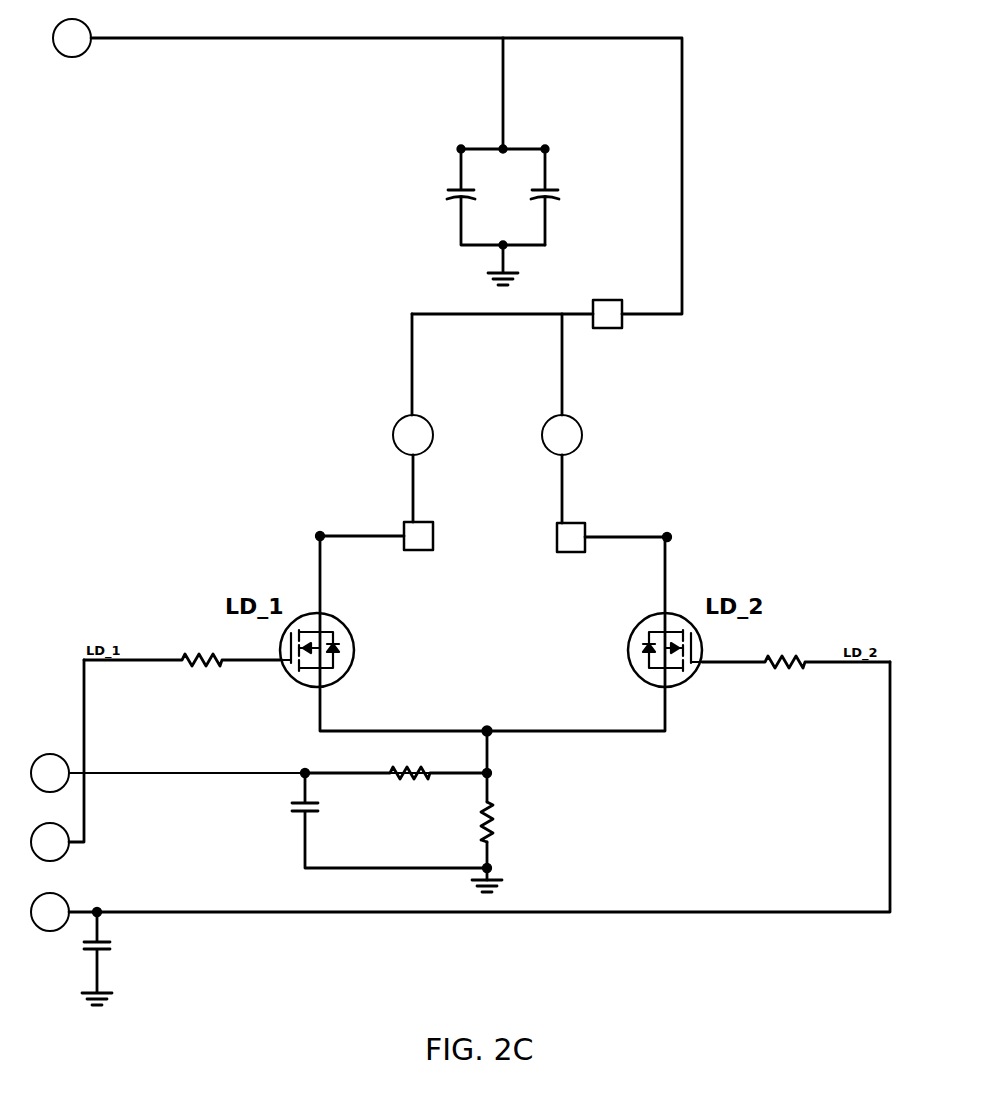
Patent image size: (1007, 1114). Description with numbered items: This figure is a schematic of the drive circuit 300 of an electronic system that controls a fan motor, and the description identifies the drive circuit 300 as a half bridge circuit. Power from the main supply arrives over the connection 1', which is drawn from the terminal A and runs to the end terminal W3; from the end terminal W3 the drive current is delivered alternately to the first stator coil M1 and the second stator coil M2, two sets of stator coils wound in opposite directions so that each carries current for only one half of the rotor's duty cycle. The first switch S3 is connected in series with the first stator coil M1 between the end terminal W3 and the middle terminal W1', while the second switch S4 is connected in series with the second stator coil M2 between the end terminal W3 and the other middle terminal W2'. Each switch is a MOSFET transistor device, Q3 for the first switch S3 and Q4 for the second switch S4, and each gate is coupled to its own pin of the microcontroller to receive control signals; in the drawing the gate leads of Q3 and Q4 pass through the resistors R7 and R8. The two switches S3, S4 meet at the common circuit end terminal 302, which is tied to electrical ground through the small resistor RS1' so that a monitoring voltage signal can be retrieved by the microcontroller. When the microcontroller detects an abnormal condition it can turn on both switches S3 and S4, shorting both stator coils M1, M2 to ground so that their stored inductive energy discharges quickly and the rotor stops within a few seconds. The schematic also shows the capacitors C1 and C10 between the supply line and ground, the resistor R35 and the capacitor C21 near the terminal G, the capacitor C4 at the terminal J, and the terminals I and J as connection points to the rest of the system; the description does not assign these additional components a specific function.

The connection 1' is at (386, 159).
The connector A is at (72, 38).
The connector G is at (259, 773).
The connector I is at (50, 842).
The connector J is at (50, 912).
The capacitor C1 18uF/100V C1 is at (448, 195).
The capacitor C10 18uF/100V C10 is at (589, 195).
The end terminal W3 is at (612, 331).
The first stator coil M1 is at (413, 435).
The second stator coil M2 is at (562, 435).
The drive circuit 300 is at (483, 444).
The middle terminal W1' is at (432, 523).
The middle terminal W2' is at (581, 525).
The MOSFET transistor device Q3 is at (369, 650).
The MOSFET transistor device Q4 is at (614, 650).
The first switch S3 is at (297, 719).
The second switch S4 is at (717, 719).
The resistor R7 100 ohm R7 is at (182, 664).
The resistor R8 100 ohm R8 is at (796, 665).
The circuit end terminal 302 is at (489, 719).
The resistor R35 10K R35 is at (396, 774).
The capacitor C21 0.1uF C21 is at (392, 823).
The small resistor RS1' is at (511, 842).
The capacitor C4 680pF C4 is at (129, 957).